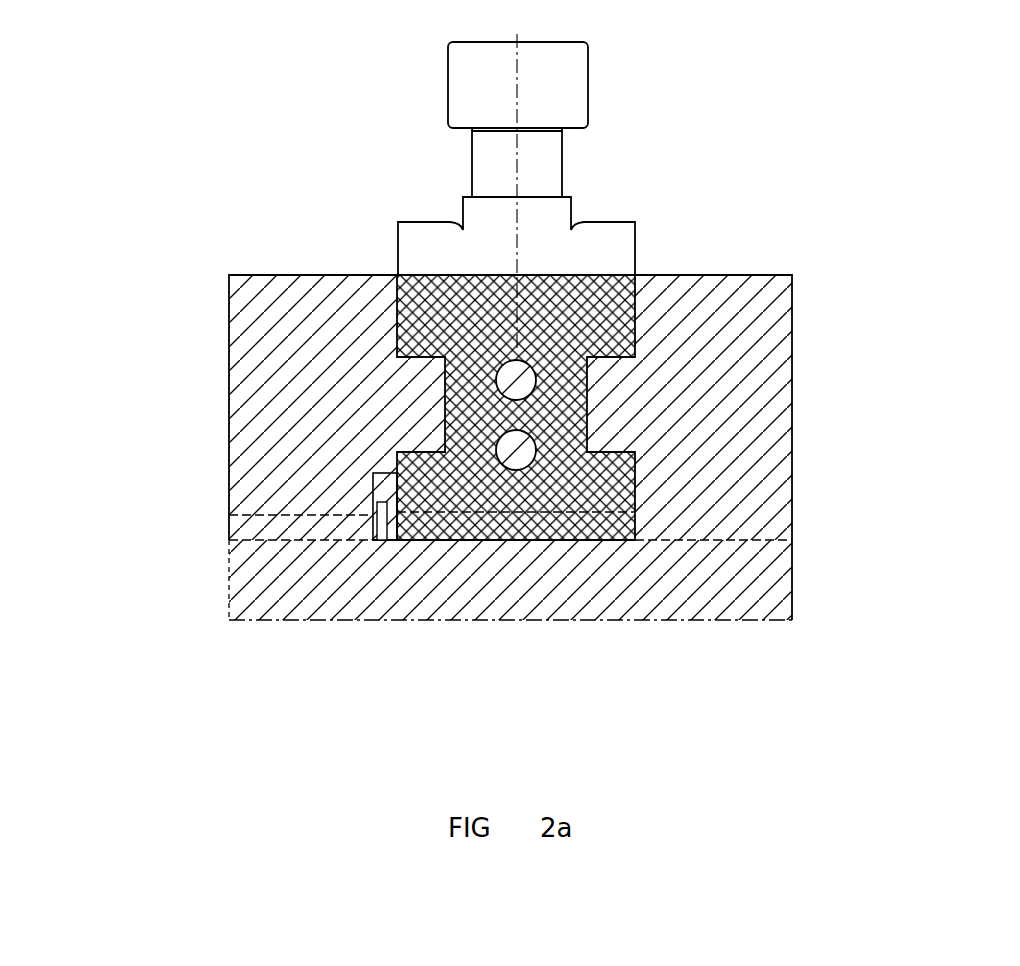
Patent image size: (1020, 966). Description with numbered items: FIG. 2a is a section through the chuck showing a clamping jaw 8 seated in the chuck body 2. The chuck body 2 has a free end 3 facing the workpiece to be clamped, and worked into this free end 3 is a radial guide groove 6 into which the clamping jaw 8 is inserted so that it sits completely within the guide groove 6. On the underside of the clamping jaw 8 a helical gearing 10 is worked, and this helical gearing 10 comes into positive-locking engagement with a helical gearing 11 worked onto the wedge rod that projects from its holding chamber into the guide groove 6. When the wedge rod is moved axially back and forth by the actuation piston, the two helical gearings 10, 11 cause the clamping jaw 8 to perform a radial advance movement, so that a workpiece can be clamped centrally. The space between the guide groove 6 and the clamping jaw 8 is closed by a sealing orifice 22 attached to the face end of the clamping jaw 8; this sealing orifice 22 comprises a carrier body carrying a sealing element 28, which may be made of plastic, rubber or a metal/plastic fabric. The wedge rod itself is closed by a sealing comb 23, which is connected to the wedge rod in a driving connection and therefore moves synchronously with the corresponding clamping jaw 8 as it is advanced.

The chuck body 2 is at (229, 338).
The free end 3 is at (282, 275).
The guide groove 6 is at (397, 320).
The clamping jaw 8 is at (397, 233).
The helical gearing 10 is at (590, 510).
The helical gearing 11 is at (313, 515).
The sealing orifice 22 is at (512, 540).
The sealing comb 23 is at (372, 490).
The sealing element 28 is at (598, 277).